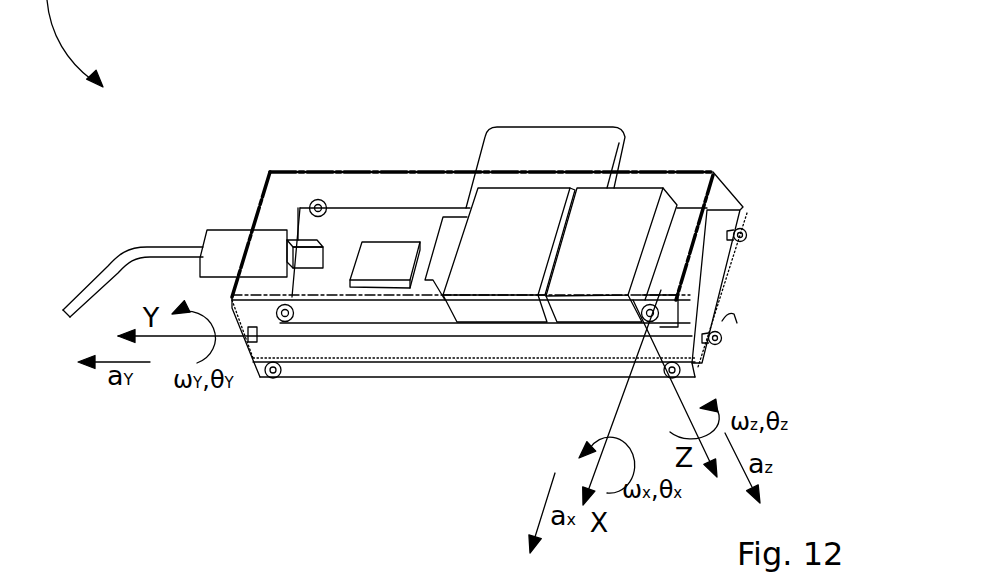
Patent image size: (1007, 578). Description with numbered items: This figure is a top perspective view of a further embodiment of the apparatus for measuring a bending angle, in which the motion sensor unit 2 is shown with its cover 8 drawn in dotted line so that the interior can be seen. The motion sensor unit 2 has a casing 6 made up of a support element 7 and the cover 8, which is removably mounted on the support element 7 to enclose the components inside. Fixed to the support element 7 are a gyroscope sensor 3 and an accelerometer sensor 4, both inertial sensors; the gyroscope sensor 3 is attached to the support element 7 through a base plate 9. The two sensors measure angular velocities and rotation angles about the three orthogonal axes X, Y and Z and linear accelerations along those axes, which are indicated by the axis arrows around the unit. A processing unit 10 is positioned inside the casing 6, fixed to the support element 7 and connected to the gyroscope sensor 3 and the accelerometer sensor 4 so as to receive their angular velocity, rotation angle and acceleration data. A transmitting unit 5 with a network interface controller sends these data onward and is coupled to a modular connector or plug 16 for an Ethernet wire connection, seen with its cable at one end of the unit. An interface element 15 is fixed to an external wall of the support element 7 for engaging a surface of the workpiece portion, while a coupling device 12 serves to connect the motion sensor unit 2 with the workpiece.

The motion sensor unit 2 is at (244, 414).
The gyroscope sensor 3 is at (510, 280).
The accelerometer sensor 4 is at (633, 207).
The transmitting unit 5 is at (380, 255).
The casing 6 is at (748, 184).
The support element 7 is at (333, 345).
The cover 8 is at (445, 182).
The base plate 9 is at (410, 227).
The processing unit 10 is at (440, 270).
The coupling device 12 is at (580, 140).
The interface element 15 is at (362, 370).
The modular connector or plug 16 is at (300, 248).